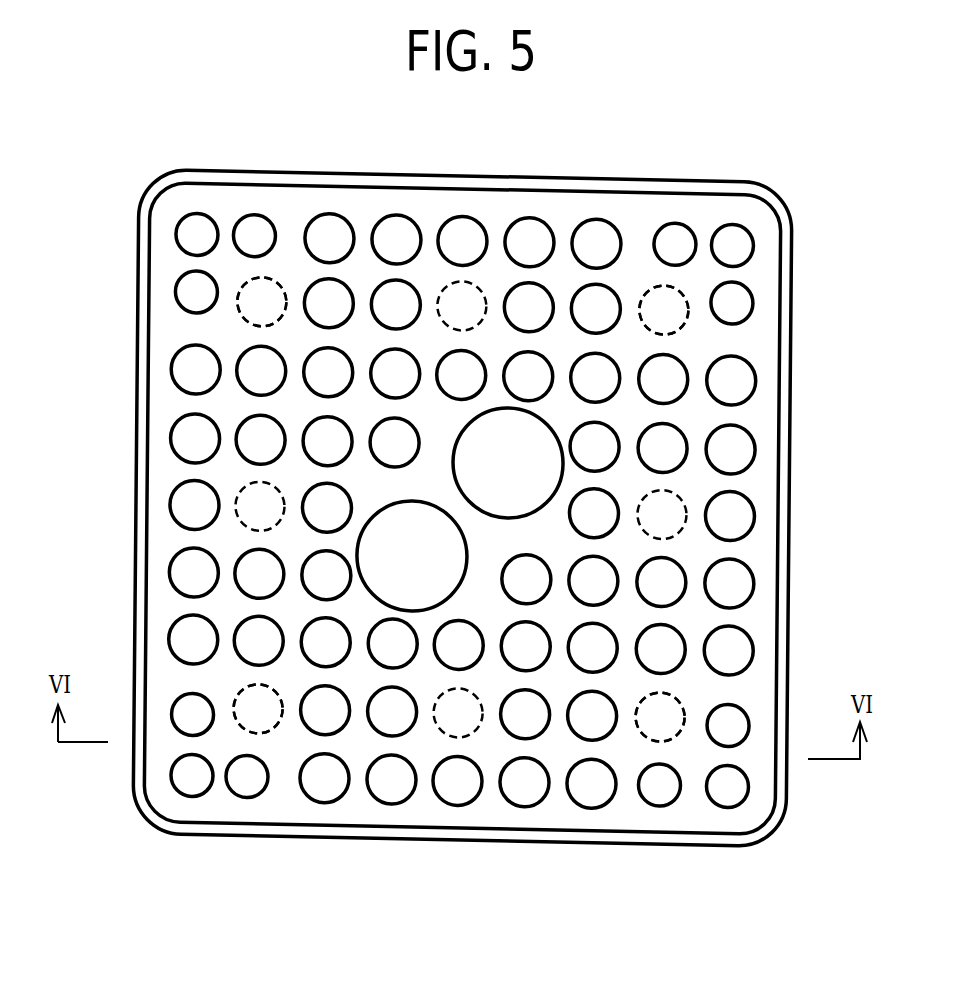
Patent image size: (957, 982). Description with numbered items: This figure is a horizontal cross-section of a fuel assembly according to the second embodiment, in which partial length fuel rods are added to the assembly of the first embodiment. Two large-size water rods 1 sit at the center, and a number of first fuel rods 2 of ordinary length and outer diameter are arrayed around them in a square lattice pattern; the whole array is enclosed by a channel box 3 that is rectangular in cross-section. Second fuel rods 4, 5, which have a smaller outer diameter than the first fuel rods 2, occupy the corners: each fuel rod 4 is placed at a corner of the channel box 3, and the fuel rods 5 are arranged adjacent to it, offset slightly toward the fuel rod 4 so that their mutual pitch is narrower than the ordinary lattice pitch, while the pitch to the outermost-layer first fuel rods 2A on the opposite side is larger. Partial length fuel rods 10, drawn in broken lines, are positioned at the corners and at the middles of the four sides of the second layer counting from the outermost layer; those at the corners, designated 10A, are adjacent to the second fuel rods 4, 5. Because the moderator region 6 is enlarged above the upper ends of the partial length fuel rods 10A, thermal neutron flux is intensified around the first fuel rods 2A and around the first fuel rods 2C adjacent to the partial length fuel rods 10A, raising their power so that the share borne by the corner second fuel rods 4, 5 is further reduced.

The water rod 1 is at (453, 554).
The first fuel rod 2 is at (737, 520).
The first fuel rod 2A is at (190, 638).
The first fuel rod 2C is at (250, 640).
The channel box 3 is at (780, 790).
The second fuel rod 4 is at (183, 778).
The second fuel rod 5 is at (197, 728).
The moderator region 6 is at (220, 318).
The partial length fuel rod 10 is at (475, 722).
The partial length fuel rod 10A is at (278, 287).